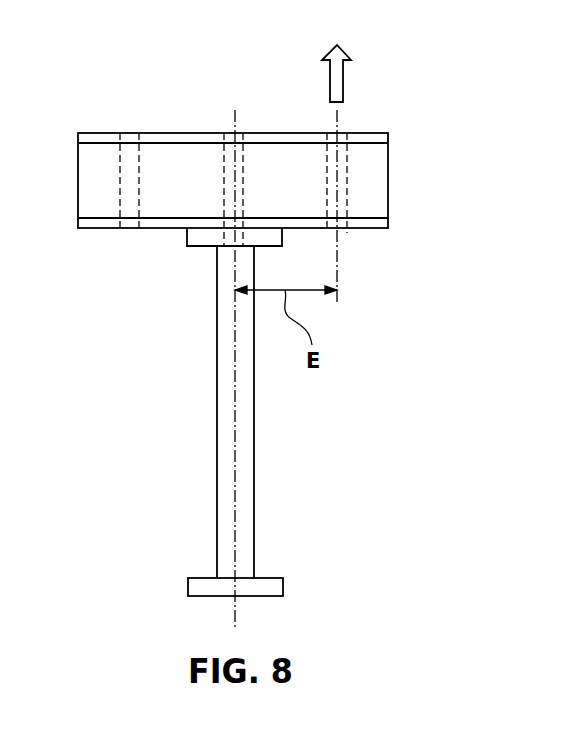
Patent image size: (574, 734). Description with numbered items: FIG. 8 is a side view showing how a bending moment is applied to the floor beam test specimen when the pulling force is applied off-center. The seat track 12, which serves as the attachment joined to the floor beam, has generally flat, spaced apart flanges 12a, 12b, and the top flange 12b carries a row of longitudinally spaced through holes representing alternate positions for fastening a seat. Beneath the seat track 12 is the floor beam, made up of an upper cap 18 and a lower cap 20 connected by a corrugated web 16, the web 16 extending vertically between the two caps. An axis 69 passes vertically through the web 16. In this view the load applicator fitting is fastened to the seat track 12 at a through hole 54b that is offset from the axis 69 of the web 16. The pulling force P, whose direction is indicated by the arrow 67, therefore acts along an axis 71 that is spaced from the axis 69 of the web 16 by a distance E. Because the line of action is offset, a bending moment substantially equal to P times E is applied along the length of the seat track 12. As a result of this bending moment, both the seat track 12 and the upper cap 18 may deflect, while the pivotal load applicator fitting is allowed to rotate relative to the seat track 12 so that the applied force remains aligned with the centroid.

The seat track 12 is at (388, 76).
The flange 12a is at (92, 140).
The top flange 12b is at (88, 222).
The through hole 54b is at (330, 155).
The arrow 67 is at (337, 75).
The upper cap 18 is at (198, 238).
The corrugated web 16 is at (255, 417).
The axis 69 is at (235, 367).
The axis 71 is at (337, 258).
The cap 20 is at (196, 582).